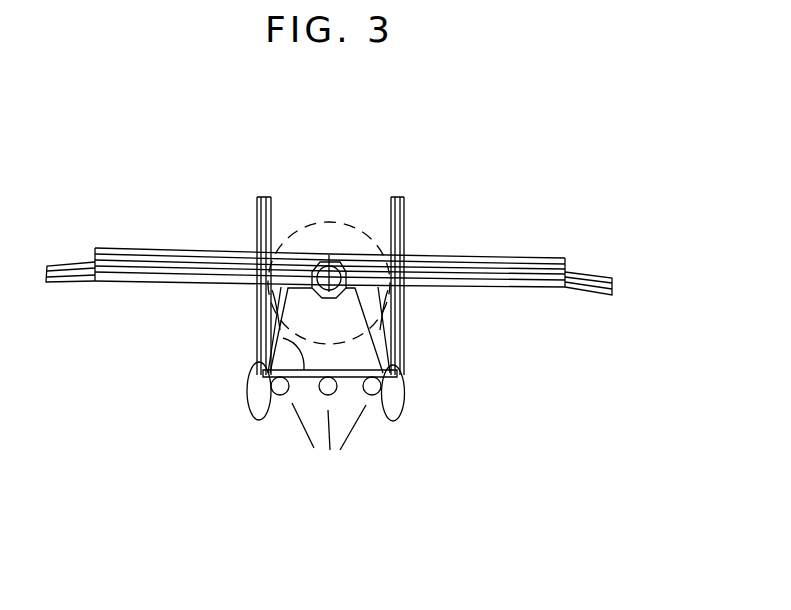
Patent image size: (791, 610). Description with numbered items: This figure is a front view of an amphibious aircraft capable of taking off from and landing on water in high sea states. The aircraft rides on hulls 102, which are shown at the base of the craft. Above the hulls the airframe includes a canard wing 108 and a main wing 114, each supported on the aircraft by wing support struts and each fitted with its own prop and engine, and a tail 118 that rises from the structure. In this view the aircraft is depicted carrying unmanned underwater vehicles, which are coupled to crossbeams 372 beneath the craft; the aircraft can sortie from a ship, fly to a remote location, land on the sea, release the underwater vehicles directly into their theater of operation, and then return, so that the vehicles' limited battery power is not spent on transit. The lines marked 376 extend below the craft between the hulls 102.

The canard wing 108 is at (121, 250).
The main wing 114 is at (600, 277).
The tail 118 is at (256, 205).
The crossbeams 372 is at (283, 338).
The hulls 102 is at (258, 398).
The exhaust / air flow lines 376 is at (329, 452).